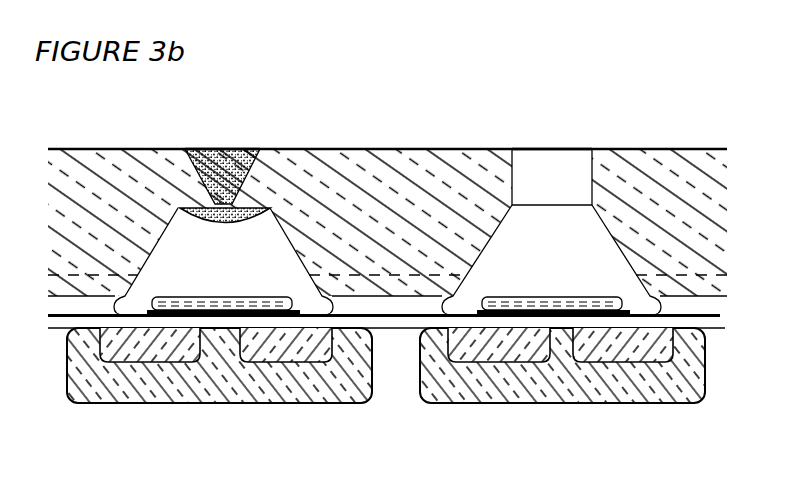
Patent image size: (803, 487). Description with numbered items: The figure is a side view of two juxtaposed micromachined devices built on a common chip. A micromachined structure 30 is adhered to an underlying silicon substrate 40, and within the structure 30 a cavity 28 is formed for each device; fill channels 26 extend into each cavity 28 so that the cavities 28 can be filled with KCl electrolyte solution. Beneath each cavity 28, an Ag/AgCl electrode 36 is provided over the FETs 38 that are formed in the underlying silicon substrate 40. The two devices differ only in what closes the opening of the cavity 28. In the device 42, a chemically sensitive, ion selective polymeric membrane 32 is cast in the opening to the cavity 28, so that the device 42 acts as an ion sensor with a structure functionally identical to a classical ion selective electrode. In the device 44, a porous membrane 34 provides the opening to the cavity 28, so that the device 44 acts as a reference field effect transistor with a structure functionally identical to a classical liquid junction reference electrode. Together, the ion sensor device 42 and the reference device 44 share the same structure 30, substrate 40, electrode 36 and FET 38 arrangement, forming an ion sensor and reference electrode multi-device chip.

The fill channels 26 is at (84, 275).
The cavity 28 is at (160, 243).
The structure 30 is at (387, 222).
The chemically sensitive polymeric membrane 32 is at (233, 146).
The porous membrane 34 is at (552, 145).
The Ag/AgCl electrode 36 is at (388, 263).
The FETs 38 is at (390, 365).
The silicon substrate 40 is at (386, 392).
The device 42 is at (233, 112).
The device 44 is at (562, 108).